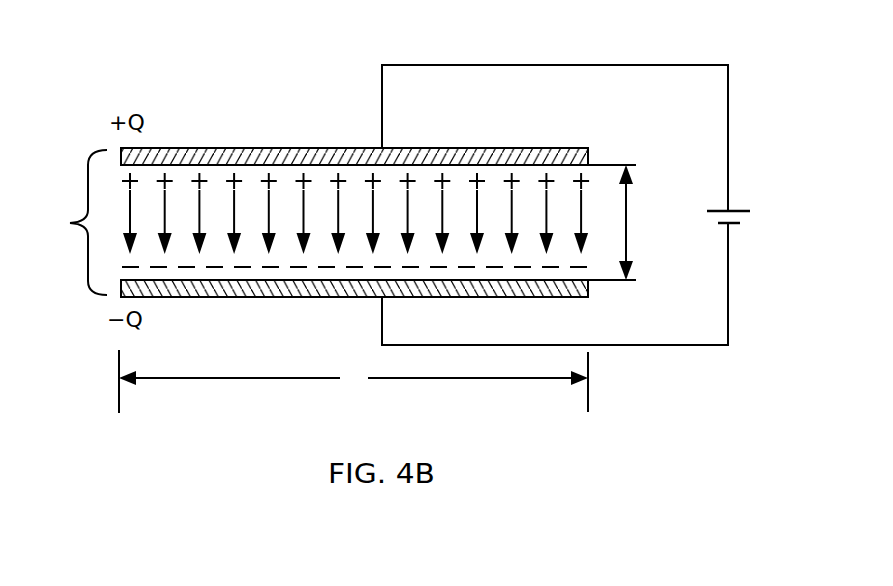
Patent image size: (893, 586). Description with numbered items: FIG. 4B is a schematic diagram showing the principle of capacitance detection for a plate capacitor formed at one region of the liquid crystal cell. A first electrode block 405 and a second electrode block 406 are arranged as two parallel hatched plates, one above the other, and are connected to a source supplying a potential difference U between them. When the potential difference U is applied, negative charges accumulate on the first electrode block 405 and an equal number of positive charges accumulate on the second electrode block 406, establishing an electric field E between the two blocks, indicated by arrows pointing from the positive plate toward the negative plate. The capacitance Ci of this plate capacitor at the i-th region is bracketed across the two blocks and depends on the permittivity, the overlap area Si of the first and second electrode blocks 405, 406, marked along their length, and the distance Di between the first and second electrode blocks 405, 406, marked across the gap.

The second electrode block 406 is at (537, 155).
The first electrode block 405 is at (565, 284).
The potential difference U is at (744, 215).
The electric field E is at (355, 213).
The capacitance Ci is at (72, 222).
The distance between the first and second electrode blocks Di is at (623, 222).
The overlap area of the first and second electrode blocks Si is at (353, 381).